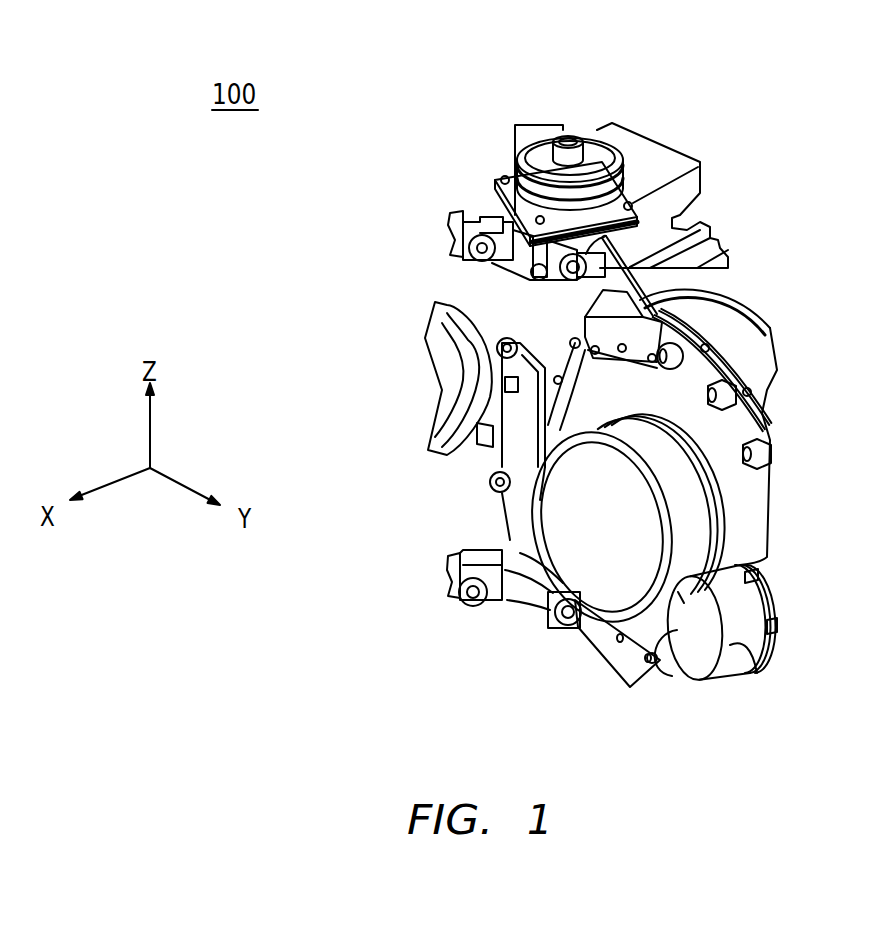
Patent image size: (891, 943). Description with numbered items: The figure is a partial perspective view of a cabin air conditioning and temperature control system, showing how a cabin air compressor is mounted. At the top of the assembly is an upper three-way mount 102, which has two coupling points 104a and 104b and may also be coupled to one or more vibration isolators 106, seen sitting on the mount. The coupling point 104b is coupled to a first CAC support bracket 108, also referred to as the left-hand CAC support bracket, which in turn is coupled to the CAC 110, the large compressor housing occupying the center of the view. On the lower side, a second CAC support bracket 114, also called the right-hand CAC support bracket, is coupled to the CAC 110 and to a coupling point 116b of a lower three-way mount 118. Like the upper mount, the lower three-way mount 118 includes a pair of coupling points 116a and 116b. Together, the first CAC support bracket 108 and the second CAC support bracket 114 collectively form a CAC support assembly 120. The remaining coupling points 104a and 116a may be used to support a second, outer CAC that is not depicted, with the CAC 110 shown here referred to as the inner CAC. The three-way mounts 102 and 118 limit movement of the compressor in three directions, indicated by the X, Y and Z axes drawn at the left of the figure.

The upper three-way mount 102 is at (618, 133).
The coupling point 104a is at (472, 218).
The coupling point 104b is at (625, 271).
The vibration isolator 106 is at (538, 160).
The first cabin air compressor support bracket 108 is at (640, 298).
The cabin air compressor 110 is at (722, 444).
The second cabin air compressor support bracket 114 is at (630, 660).
The coupling point 116a is at (460, 592).
The coupling point 116b is at (563, 618).
The lower three-way mount 118 is at (518, 615).
The CAC support assembly 120 is at (380, 285).